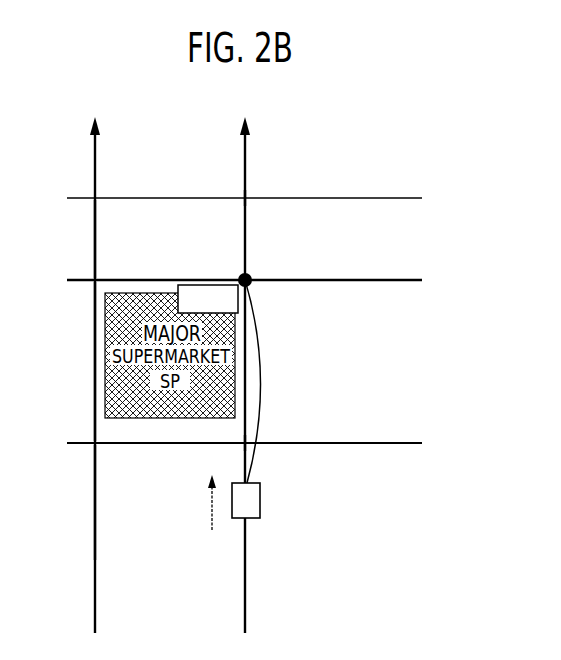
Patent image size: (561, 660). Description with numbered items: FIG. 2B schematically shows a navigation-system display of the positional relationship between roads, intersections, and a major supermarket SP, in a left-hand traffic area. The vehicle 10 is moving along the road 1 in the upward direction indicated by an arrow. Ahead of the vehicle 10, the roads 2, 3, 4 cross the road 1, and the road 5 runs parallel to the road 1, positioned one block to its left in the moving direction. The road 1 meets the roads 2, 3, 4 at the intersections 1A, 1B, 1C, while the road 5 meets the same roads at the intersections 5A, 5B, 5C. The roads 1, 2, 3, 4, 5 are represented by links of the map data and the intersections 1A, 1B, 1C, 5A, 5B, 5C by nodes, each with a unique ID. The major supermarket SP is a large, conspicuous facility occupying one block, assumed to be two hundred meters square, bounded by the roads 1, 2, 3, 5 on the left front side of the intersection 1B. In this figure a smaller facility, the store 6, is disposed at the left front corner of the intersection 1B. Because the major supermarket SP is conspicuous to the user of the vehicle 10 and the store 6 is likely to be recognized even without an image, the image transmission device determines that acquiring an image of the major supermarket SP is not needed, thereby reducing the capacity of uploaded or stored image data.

The road 1 is at (245, 590).
The intersection 1A is at (243, 444).
The intersection 1B is at (252, 276).
The intersection 1C is at (250, 194).
The road 2 is at (82, 447).
The road 3 is at (82, 284).
The road 4 is at (82, 200).
The road 5 is at (95, 590).
The intersection 5A is at (95, 442).
The intersection 5B is at (95, 279).
The intersection 5C is at (95, 197).
The store 6 is at (218, 285).
The vehicle 10 is at (260, 498).